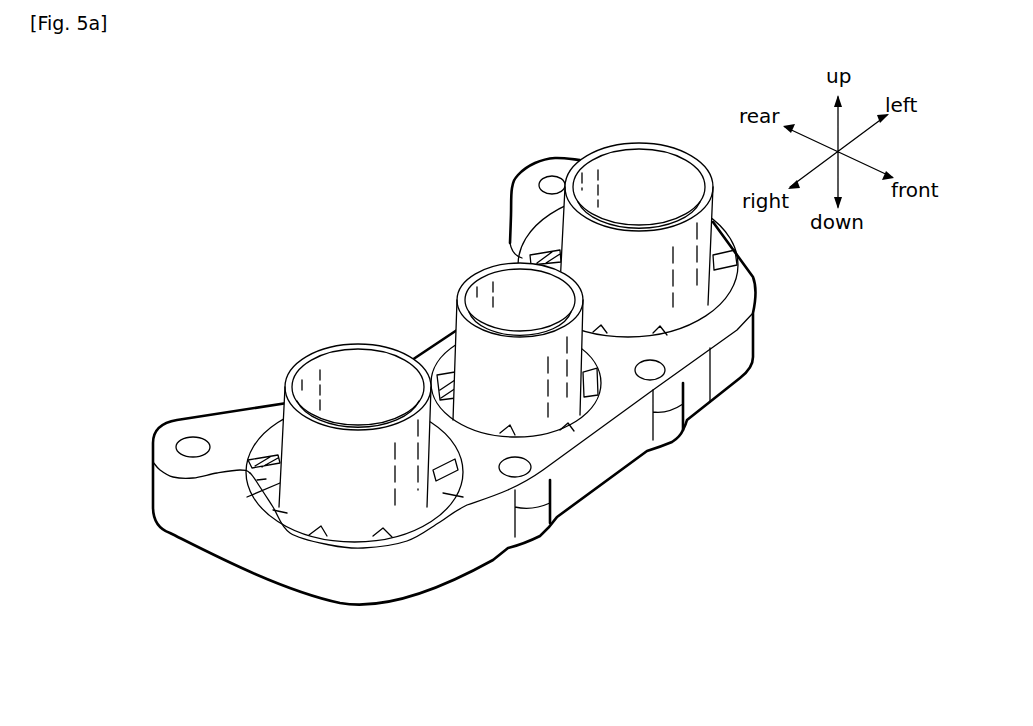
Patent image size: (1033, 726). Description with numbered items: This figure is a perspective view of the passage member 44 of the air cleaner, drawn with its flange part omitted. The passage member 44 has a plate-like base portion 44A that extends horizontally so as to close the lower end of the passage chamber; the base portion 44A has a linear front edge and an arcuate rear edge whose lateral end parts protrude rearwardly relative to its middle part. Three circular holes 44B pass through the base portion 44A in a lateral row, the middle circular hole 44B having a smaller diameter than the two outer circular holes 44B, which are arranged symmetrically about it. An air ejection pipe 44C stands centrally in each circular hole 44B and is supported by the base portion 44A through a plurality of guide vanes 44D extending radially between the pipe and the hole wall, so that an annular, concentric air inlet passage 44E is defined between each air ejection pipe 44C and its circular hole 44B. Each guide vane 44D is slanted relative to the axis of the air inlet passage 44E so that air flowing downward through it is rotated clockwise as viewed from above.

The passage member 44 is at (408, 404).
The base portion 44A is at (267, 567).
The circular hole 44B is at (273, 438).
The air ejection pipe 44C is at (336, 372).
The guide vane 44D is at (437, 490).
The air inlet passage 44E is at (172, 477).